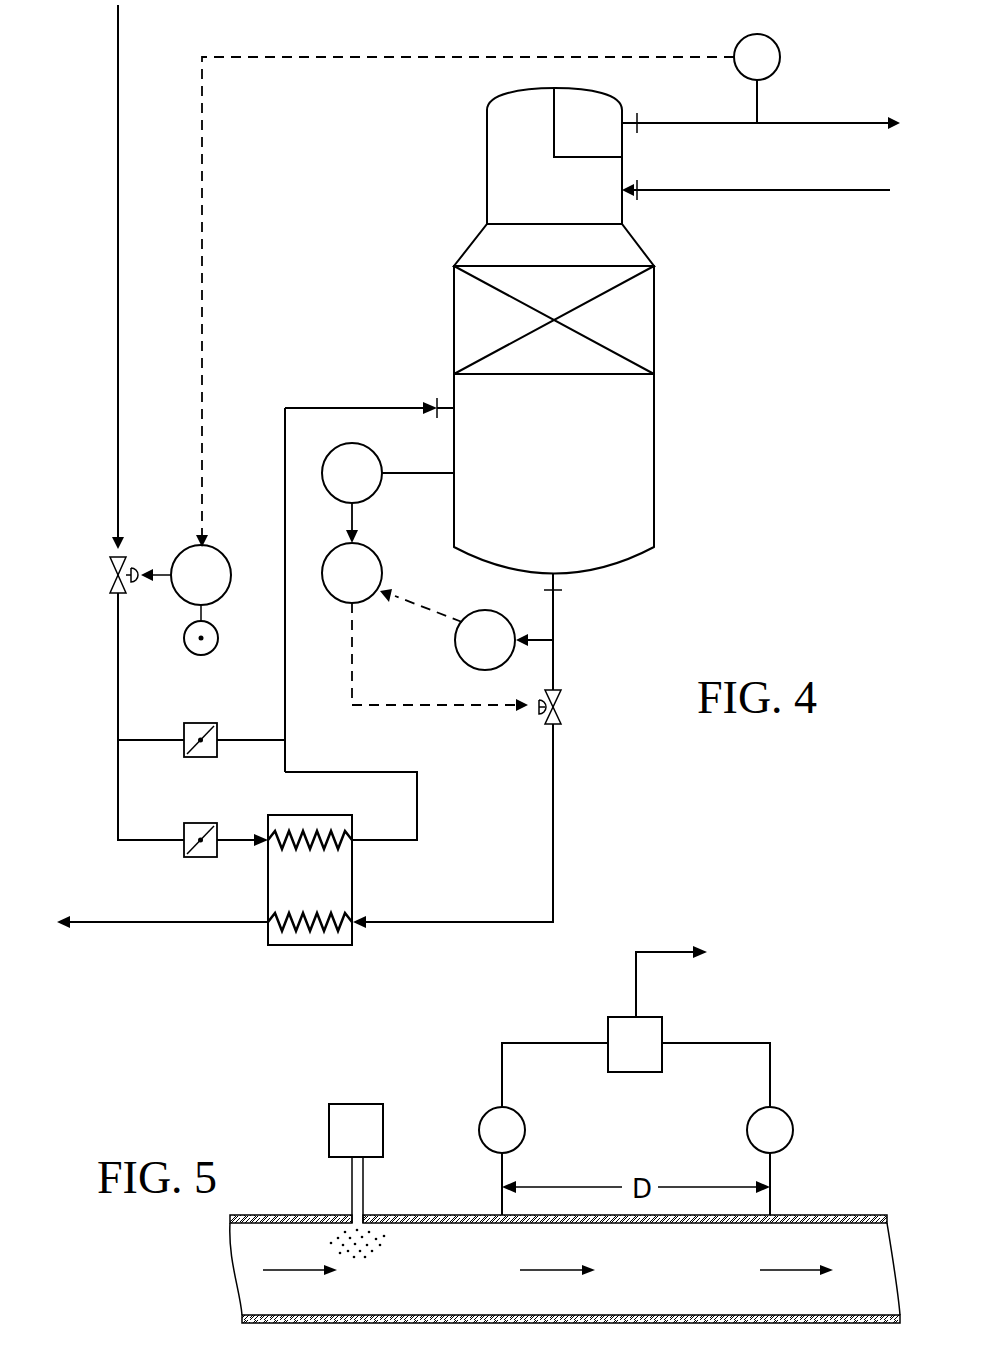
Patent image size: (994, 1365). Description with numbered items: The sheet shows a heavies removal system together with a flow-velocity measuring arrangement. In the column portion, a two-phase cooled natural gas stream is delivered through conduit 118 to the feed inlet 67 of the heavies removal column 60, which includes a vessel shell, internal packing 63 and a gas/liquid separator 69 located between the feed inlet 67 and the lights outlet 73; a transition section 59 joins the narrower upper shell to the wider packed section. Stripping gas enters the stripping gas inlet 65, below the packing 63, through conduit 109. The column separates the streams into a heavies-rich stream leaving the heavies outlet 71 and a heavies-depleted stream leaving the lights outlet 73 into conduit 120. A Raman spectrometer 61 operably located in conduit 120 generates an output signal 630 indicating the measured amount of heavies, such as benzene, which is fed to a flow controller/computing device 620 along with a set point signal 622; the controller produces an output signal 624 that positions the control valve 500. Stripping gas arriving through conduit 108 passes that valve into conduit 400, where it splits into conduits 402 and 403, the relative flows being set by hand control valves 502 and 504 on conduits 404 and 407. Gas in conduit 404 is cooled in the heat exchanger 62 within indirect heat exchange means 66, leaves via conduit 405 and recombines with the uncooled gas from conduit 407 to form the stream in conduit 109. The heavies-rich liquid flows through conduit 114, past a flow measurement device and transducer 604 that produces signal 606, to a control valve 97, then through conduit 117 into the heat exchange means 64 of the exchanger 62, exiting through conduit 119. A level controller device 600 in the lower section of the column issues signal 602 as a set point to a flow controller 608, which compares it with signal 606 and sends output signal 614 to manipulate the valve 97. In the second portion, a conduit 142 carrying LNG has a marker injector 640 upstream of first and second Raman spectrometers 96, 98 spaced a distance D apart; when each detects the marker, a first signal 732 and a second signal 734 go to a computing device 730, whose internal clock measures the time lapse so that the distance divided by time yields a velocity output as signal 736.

In FIG. 4, the conduit 108 is at (120, 33).
In FIG. 4, the output signal 630 is at (357, 57).
In FIG. 4, the Raman spectrometer 61 is at (777, 47).
In FIG. 4, the conduit 120 is at (827, 123).
In FIG. 4, the lights outlet 73 is at (630, 121).
In FIG. 4, the conduit 118 is at (828, 190).
In FIG. 4, the feed inlet 67 is at (630, 192).
In FIG. 4, the heavies removal column 60 is at (476, 170).
In FIG. 4, the gas/liquid separator 69 is at (600, 158).
In FIG. 4, the vessel transition / lower section 59 is at (470, 248).
In FIG. 4, the internal packing 63 is at (655, 322).
In FIG. 4, the conduit 109 is at (355, 408).
In FIG. 4, the stripping gas inlet 65 is at (441, 404).
In FIG. 4, the level controller device 600 is at (343, 452).
In FIG. 4, the output signal 602 is at (346, 520).
In FIG. 4, the flow controller 608 is at (342, 600).
In FIG. 4, the output signal 606 is at (433, 612).
In FIG. 4, the output signal 614 is at (350, 688).
In FIG. 4, the flow measurement device and transducer 604 is at (470, 668).
In FIG. 4, the conduit 114 is at (557, 655).
In FIG. 4, the heavies outlet 71 is at (557, 585).
In FIG. 4, the control valve 97 is at (562, 718).
In FIG. 4, the conduit 117 is at (557, 835).
In FIG. 4, the control valve 500 is at (110, 585).
In FIG. 4, the output signal 624 is at (168, 572).
In FIG. 4, the flow controller/computing device 620 is at (208, 548).
In FIG. 4, the set point signal 622 is at (213, 655).
In FIG. 4, the conduit 400 is at (118, 690).
In FIG. 4, the conduit 402 is at (125, 740).
In FIG. 4, the conduit 407 is at (268, 740).
In FIG. 4, the hand control valve 502 is at (195, 757).
In FIG. 4, the conduit 403 is at (118, 792).
In FIG. 4, the hand control valve 504 is at (195, 857).
In FIG. 4, the conduit 404 is at (237, 840).
In FIG. 4, the conduit 405 is at (360, 772).
In FIG. 4, the heat exchanger 62 is at (305, 946).
In FIG. 4, the indirect heat exchange means 66 is at (320, 846).
In FIG. 4, the heat exchange means 64 is at (298, 915).
In FIG. 4, the conduit 119 is at (195, 925).
In FIG. 5, the computing device 730 is at (620, 1017).
In FIG. 5, the signal 736 is at (662, 950).
In FIG. 5, the first signal 732 is at (540, 1043).
In FIG. 5, the second signal 734 is at (732, 1043).
In FIG. 5, the first Raman spectrometer 96 is at (488, 1112).
In FIG. 5, the second Raman spectrometer 98 is at (785, 1112).
In FIG. 5, the marker injector 640 is at (329, 1130).
In FIG. 5, the conduit 142 is at (830, 1215).